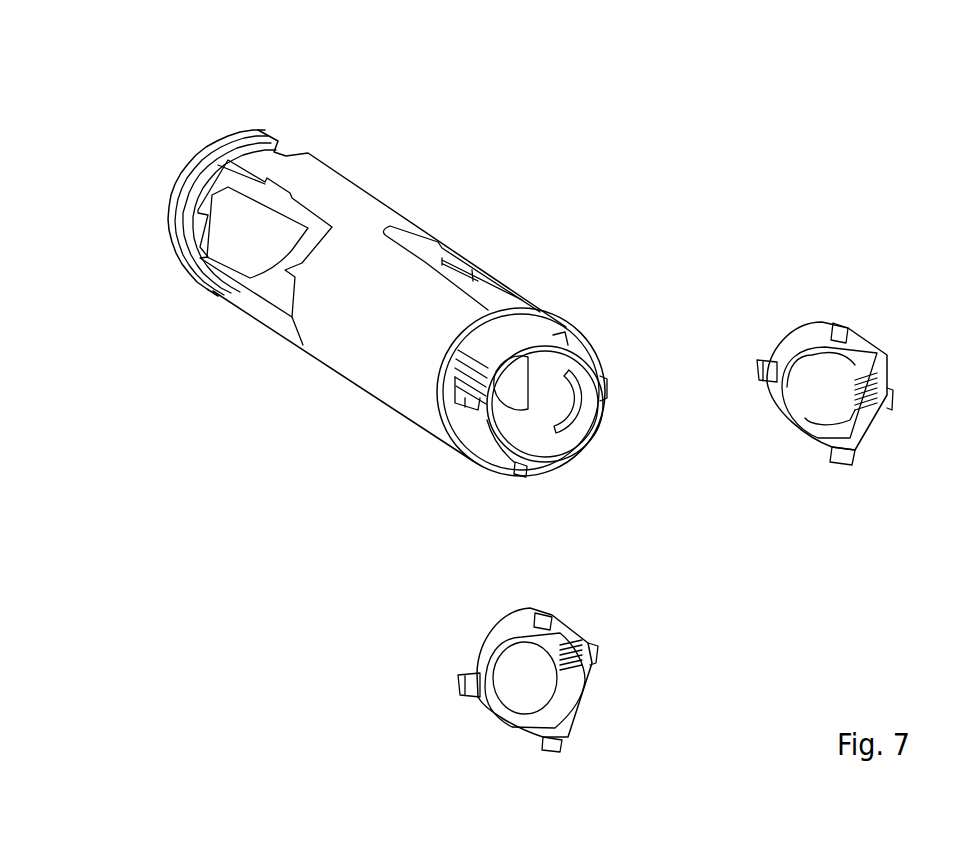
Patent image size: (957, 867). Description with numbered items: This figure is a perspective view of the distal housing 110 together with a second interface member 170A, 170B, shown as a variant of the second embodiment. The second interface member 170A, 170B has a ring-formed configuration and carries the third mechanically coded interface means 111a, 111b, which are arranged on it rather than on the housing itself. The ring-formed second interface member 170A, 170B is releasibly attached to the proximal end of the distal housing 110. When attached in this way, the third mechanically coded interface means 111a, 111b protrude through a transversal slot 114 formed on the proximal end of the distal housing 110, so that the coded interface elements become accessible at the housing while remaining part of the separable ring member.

The housing body 110 is at (342, 208).
The transversal slot 114 is at (453, 381).
The second interface member 170A is at (799, 330).
The second interface member 170B is at (510, 627).
The third mechanically coded interface means 111a is at (762, 380).
The third mechanically coded interface means 111b is at (458, 682).